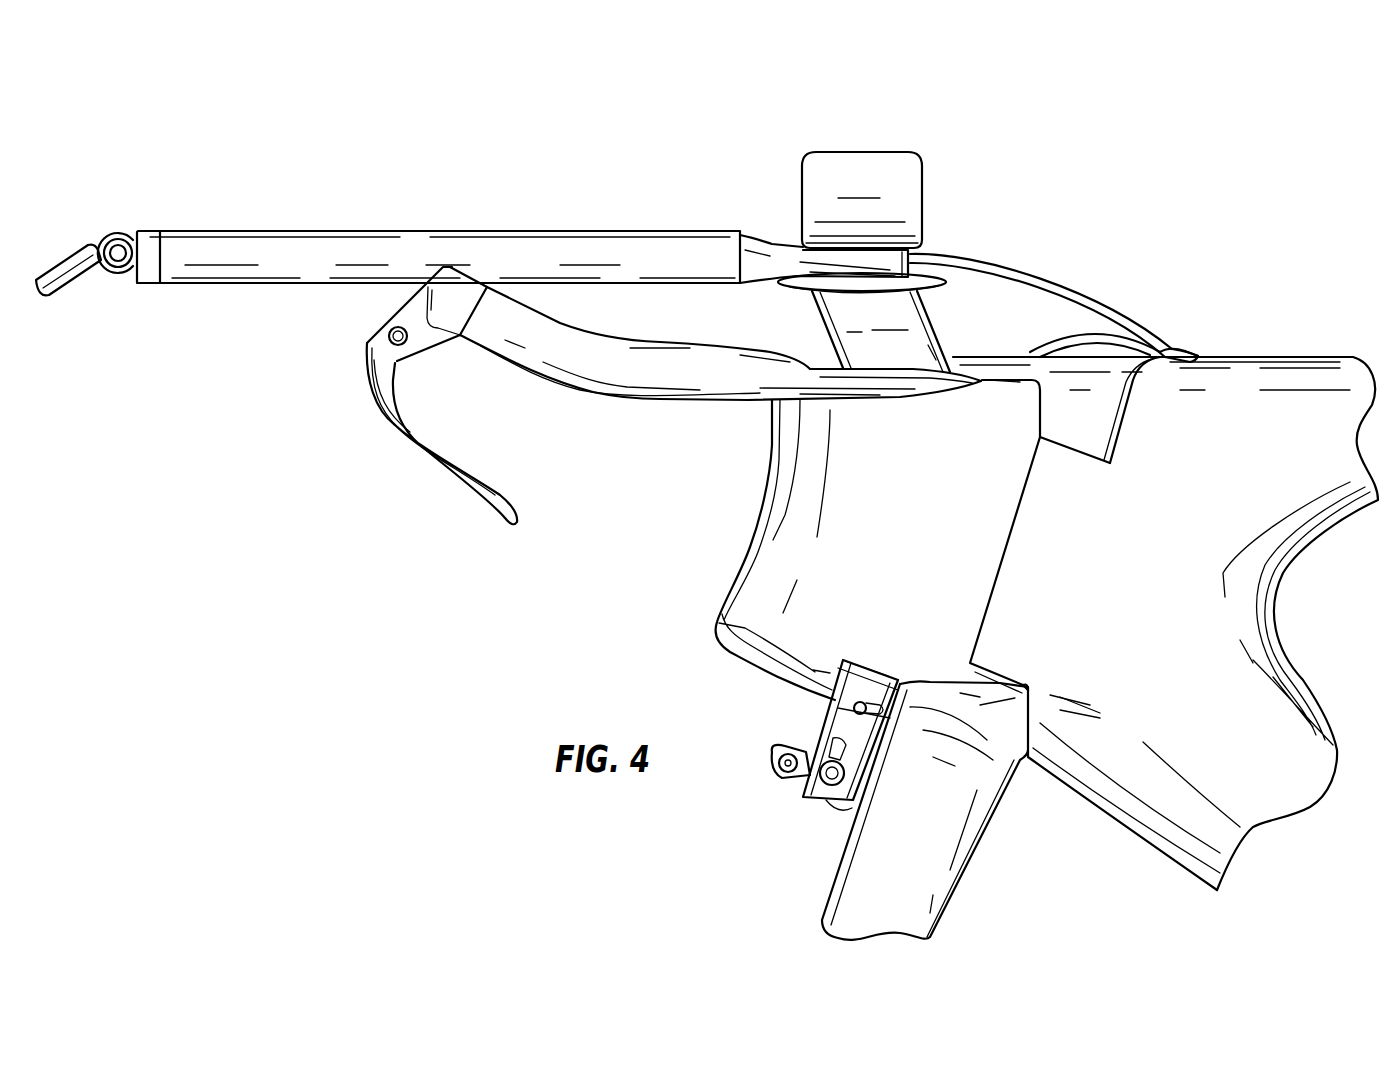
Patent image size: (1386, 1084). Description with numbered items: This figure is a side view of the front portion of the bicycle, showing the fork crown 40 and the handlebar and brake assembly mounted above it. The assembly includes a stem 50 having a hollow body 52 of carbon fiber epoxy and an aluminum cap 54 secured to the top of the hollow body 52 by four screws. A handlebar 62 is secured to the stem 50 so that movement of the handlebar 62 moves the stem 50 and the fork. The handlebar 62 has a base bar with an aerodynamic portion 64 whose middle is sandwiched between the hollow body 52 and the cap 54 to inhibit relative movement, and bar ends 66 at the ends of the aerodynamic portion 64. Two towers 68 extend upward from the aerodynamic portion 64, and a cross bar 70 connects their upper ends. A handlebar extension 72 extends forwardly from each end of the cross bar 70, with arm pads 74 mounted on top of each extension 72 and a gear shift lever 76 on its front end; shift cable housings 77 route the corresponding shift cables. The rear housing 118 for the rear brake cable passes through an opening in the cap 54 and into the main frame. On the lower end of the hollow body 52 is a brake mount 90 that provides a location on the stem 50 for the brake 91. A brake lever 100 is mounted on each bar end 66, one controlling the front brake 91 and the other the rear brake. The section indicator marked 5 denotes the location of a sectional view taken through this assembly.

The crown 40 is at (980, 710).
The stem 50 is at (704, 541).
The hollow body 52 is at (878, 540).
The cap 54 is at (1013, 352).
The handlebar 62 is at (719, 161).
The aerodynamic portion 64 is at (918, 392).
The bar ends 66 is at (617, 392).
The towers 68 is at (838, 316).
The cross bar 70 is at (860, 286).
The handlebar extension 72 is at (725, 240).
The arm pads 74 is at (858, 154).
The gear shift lever 76 is at (62, 262).
The shift cable housings 77 is at (1020, 268).
The rear housing 118 is at (1170, 330).
The brake mount 90 is at (815, 697).
The brake 91 is at (800, 787).
The brake lever 100 is at (457, 475).
The section line 5 is at (1190, 285).